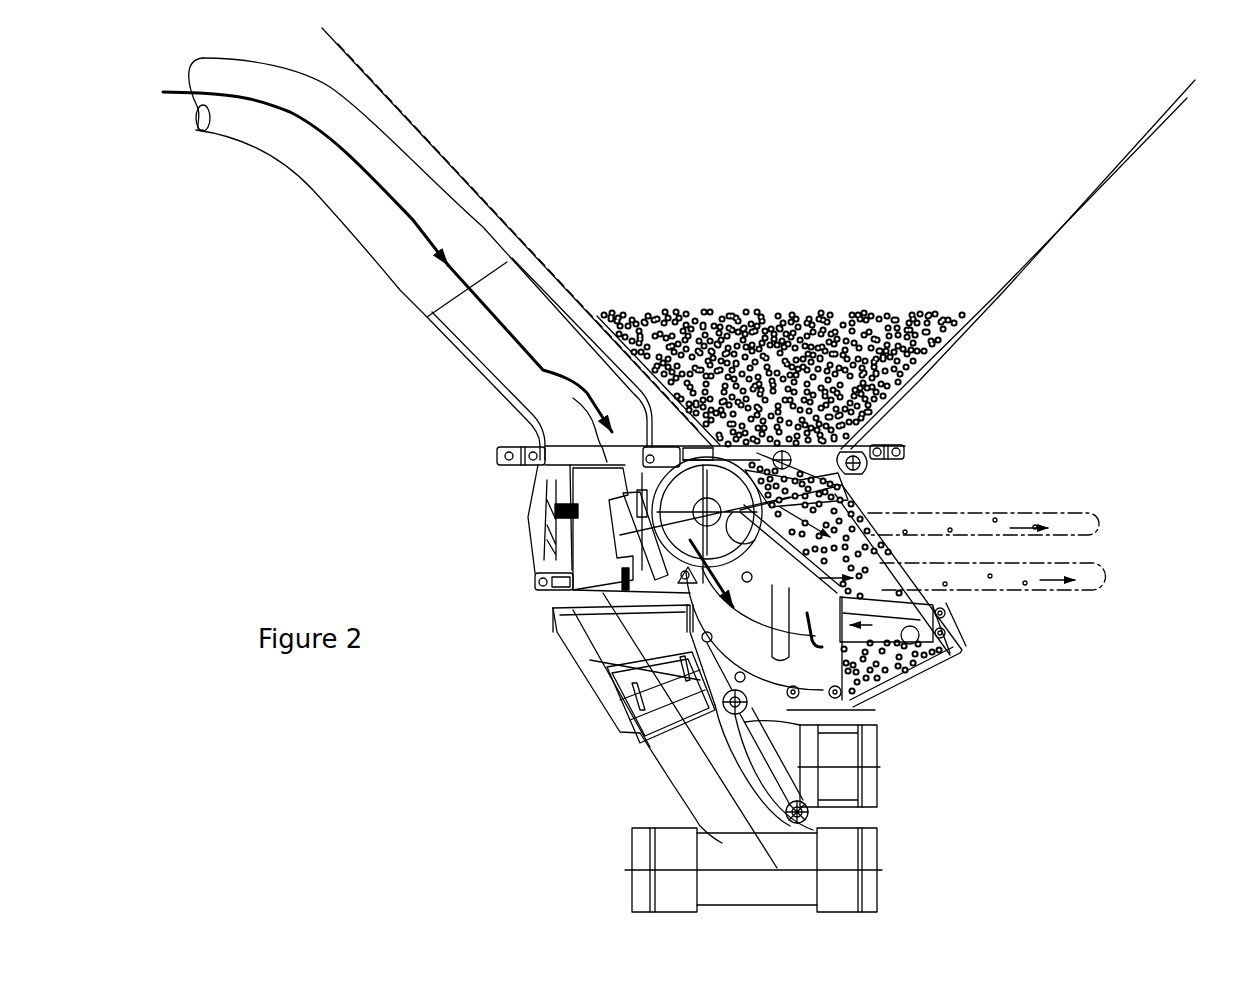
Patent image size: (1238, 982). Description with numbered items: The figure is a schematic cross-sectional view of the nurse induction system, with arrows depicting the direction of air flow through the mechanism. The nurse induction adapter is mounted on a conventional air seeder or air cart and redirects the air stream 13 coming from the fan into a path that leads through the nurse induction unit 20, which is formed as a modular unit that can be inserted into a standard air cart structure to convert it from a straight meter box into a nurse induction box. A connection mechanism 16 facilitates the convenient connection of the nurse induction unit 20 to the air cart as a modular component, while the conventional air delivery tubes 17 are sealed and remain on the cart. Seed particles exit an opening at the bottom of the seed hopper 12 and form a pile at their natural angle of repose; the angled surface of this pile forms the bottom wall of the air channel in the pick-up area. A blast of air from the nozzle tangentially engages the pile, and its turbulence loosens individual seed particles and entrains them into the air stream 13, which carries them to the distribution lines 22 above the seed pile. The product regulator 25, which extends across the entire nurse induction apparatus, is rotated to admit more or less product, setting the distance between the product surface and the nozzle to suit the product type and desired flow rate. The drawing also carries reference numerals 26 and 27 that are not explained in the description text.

The seed hopper 12 is at (1012, 292).
The air stream 13 is at (448, 274).
The connection mechanism 16 is at (520, 536).
The air delivery tubes 17 is at (548, 598).
The nurse induction unit 20 is at (940, 683).
The distribution lines 22 is at (1116, 560).
The product regulator 25 is at (955, 626).
The rotor 26 is at (693, 505).
The pellet slide 27 is at (652, 482).